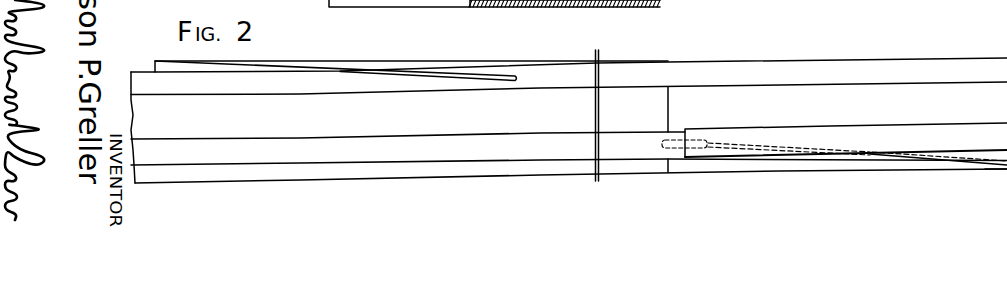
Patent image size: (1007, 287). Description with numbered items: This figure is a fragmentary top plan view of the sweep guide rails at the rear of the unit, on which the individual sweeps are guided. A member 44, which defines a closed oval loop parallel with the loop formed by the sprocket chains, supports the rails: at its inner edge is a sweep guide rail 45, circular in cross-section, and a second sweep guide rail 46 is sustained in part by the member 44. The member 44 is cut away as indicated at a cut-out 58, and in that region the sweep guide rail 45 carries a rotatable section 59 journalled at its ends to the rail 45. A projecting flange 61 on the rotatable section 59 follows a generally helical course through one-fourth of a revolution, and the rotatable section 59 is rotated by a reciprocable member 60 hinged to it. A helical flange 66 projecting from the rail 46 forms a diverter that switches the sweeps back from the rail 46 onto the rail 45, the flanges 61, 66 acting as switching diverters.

The member 44 is at (267, 174).
The sweep guide rail 45 is at (410, 158).
The second sweep guide rail 46 is at (959, 62).
The cut-out 58 is at (668, 108).
The rotatable section 59 is at (859, 129).
The reciprocable member 60 is at (995, 182).
The projecting flange 61 is at (913, 157).
The helical flange 66 is at (283, 66).